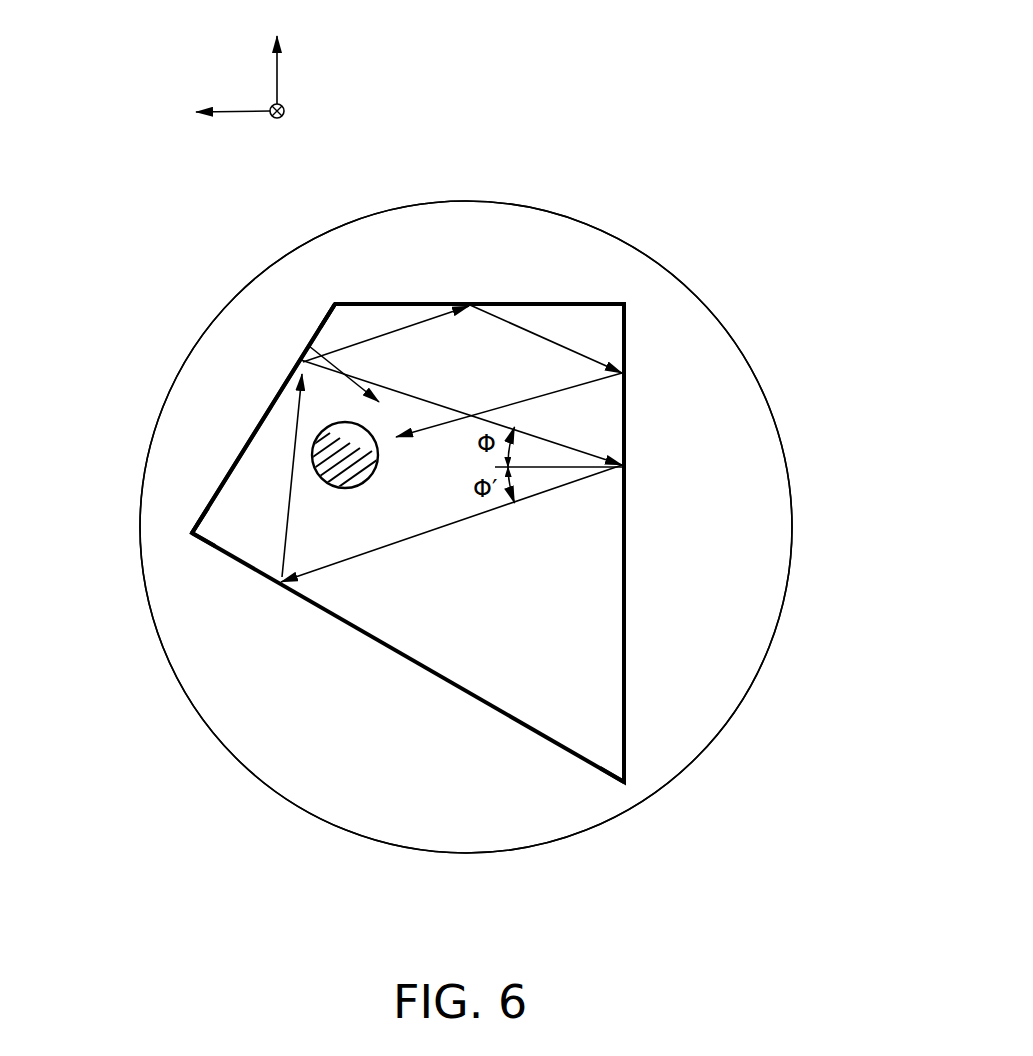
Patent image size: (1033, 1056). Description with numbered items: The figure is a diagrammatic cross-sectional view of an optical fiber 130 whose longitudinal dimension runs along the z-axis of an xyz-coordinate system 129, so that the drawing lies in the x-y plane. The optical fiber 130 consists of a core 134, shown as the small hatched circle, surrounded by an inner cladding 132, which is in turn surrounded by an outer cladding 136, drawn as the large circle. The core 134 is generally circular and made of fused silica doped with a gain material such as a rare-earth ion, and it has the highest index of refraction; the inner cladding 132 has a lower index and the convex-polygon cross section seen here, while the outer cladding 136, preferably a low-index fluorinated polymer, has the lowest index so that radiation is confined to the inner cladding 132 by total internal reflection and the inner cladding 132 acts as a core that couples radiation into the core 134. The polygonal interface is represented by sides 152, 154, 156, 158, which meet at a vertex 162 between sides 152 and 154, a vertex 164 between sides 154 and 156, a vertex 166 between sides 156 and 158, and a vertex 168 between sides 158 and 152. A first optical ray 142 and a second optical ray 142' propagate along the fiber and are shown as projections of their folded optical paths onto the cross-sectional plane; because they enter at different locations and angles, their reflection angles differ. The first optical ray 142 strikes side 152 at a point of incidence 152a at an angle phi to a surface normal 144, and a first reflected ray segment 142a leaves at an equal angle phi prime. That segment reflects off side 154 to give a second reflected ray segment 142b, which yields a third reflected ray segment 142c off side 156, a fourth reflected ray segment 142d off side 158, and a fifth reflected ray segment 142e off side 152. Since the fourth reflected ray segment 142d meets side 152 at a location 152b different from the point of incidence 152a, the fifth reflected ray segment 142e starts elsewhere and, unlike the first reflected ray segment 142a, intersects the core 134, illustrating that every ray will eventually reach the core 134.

The xyz-coordinate system 129 is at (225, 53).
The optical fiber 130 is at (597, 152).
The inner cladding 132 is at (211, 497).
The core 134 is at (311, 449).
The outer cladding 136 is at (138, 563).
The first optical ray 142 is at (576, 412).
The first reflected ray segment 142a is at (333, 565).
The second reflected ray segment 142b is at (283, 550).
The third reflected ray segment 142c is at (347, 347).
The fourth reflected ray segment 142d is at (550, 340).
The fifth reflected ray segment 142e is at (587, 383).
The second optical ray 142' is at (376, 266).
The surface normal 144 is at (552, 468).
The side 152 is at (625, 655).
The point of incidence 152a is at (625, 467).
The location 152b is at (625, 373).
The side 154 is at (542, 737).
The side 156 is at (268, 410).
The side 158 is at (420, 302).
The vertex 162 is at (624, 782).
The vertex 164 is at (190, 532).
The vertex 166 is at (335, 302).
The vertex 168 is at (625, 305).